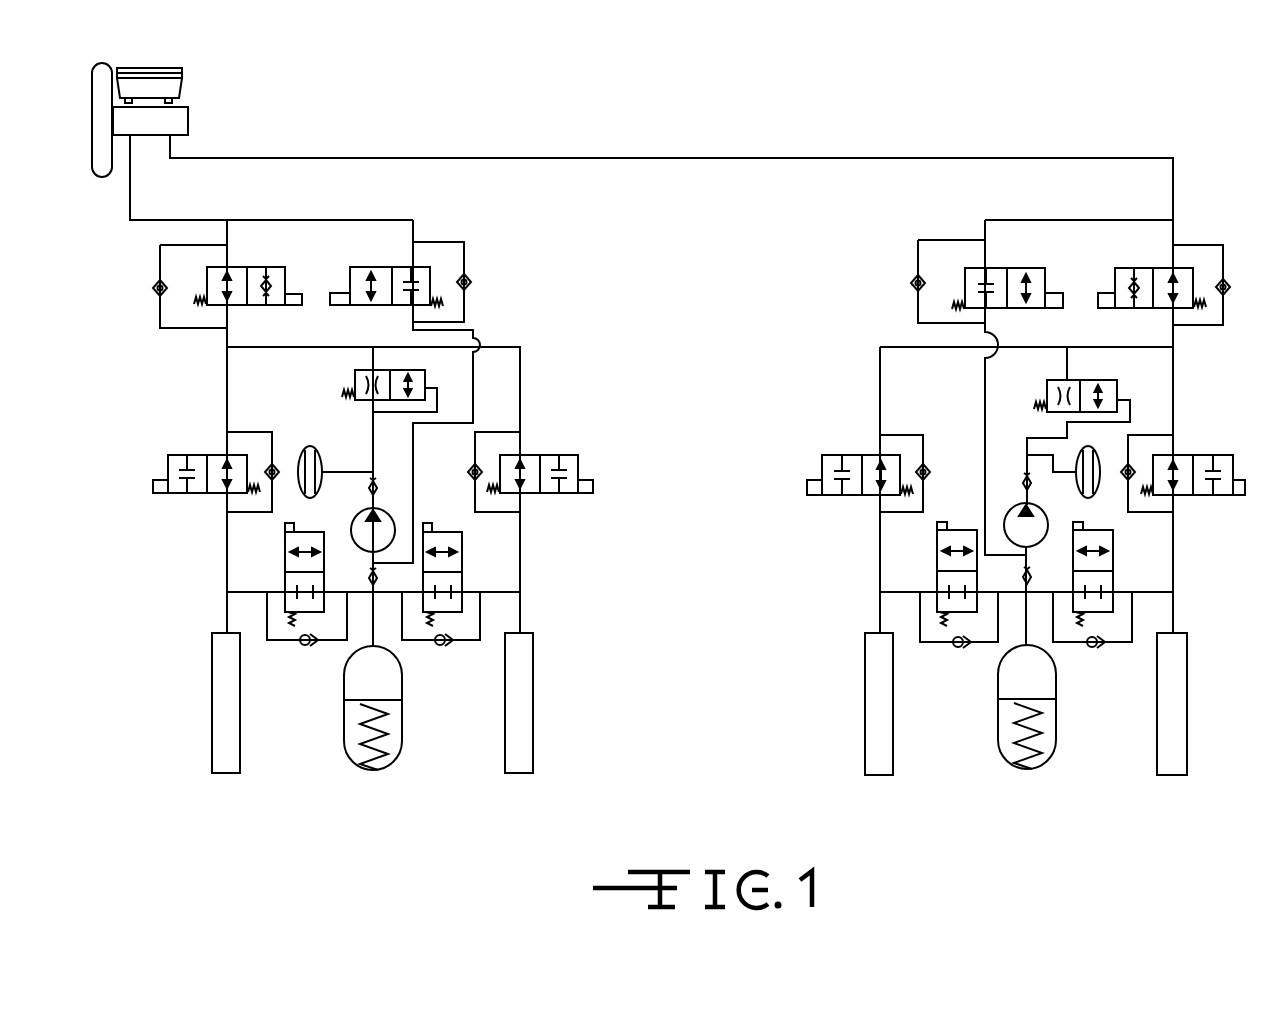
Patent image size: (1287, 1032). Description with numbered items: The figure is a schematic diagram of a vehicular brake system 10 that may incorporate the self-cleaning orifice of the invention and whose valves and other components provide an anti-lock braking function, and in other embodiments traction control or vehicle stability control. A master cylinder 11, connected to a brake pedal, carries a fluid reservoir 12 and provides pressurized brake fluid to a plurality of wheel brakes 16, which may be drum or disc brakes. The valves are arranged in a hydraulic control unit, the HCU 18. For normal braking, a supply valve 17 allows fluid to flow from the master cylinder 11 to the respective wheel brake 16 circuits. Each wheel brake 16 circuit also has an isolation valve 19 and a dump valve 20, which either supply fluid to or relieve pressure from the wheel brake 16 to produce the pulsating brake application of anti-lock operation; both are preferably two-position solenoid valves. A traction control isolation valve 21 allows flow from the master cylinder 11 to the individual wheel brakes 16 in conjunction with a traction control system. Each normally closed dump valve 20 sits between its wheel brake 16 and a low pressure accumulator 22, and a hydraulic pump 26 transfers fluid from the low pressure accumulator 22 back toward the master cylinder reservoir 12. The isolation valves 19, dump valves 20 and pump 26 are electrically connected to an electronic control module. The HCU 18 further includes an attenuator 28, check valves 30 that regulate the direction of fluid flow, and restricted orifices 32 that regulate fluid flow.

The vehicular brake system 10 is at (179, 52).
The master cylinder 11 is at (125, 118).
The fluid reservoir 12 is at (165, 85).
The wheel brake 16 is at (222, 700).
The supply valve 17 is at (401, 266).
The HCU 18 is at (174, 384).
The isolation valve 19 is at (180, 493).
The dump valve 20 is at (290, 580).
The traction control isolation valve 21 is at (205, 286).
The low pressure accumulator 22 is at (393, 738).
The hydraulic pump 26 is at (384, 512).
The attenuator 28 is at (312, 446).
The check valve 30 is at (157, 283).
The restricted orifice 32 is at (427, 392).